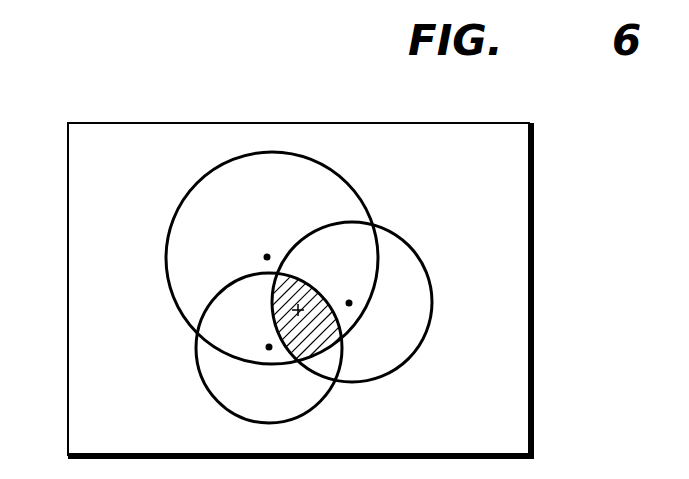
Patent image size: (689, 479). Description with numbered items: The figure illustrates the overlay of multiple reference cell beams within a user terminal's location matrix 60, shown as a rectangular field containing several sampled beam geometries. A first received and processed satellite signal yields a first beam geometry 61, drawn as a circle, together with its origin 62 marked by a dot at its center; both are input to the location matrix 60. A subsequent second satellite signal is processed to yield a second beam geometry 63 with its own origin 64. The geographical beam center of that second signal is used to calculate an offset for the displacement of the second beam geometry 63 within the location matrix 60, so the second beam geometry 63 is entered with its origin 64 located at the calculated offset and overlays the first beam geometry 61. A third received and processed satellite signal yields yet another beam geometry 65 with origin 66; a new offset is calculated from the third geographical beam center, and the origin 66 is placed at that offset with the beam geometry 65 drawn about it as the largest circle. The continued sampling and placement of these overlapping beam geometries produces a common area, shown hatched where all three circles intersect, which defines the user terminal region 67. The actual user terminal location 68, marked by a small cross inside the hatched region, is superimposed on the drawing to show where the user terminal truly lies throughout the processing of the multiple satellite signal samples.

The location matrix 60 is at (68, 235).
The beam geometry 61 is at (205, 390).
The origin 62 is at (269, 347).
The beam geometry 63 is at (411, 244).
The origin 64 is at (350, 304).
The beam geometry 65 is at (172, 218).
The origin 66 is at (265, 256).
The user terminal region 67 is at (308, 338).
The actual user terminal location 68 is at (306, 295).